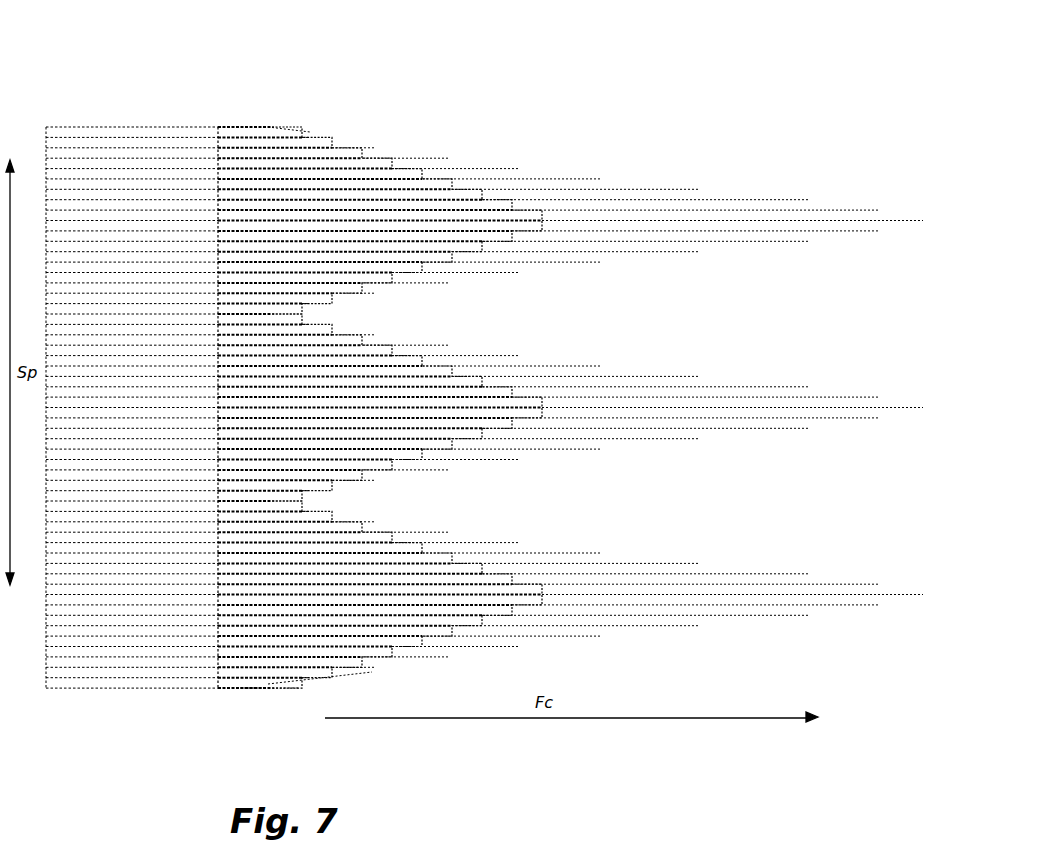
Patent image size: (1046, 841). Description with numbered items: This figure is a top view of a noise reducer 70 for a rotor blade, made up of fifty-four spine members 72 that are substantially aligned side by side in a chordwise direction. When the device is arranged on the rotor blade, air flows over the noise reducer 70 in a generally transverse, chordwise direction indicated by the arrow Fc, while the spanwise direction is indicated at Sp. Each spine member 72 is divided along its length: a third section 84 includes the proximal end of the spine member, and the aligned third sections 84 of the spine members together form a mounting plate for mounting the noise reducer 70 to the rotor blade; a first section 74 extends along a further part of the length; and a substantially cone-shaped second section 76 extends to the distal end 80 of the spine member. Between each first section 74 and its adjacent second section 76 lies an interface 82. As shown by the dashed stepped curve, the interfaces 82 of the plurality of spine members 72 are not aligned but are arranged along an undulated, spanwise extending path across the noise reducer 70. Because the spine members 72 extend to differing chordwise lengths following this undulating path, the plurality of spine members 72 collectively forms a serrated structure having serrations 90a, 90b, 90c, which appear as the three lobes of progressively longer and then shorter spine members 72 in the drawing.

The noise reducer 70 is at (590, 111).
The spine member 72 is at (228, 127).
The first section 74 is at (240, 688).
The second section 76 is at (280, 688).
The distal end 80 is at (372, 672).
The interface 82 is at (268, 127).
The third section 84 is at (115, 688).
The serration 90a is at (797, 171).
The serration 90b is at (822, 351).
The serration 90c is at (791, 547).